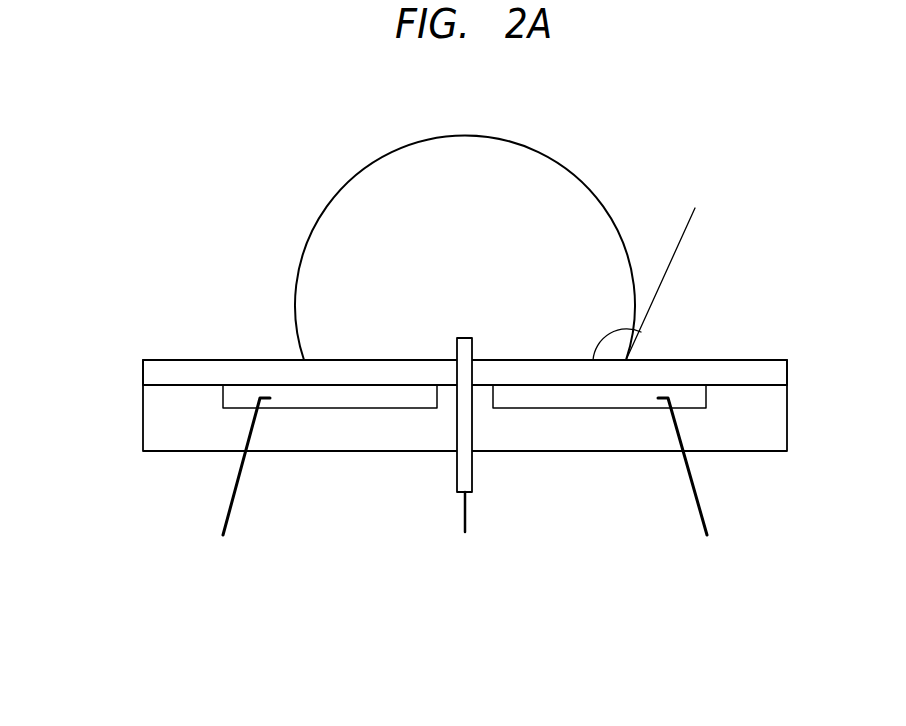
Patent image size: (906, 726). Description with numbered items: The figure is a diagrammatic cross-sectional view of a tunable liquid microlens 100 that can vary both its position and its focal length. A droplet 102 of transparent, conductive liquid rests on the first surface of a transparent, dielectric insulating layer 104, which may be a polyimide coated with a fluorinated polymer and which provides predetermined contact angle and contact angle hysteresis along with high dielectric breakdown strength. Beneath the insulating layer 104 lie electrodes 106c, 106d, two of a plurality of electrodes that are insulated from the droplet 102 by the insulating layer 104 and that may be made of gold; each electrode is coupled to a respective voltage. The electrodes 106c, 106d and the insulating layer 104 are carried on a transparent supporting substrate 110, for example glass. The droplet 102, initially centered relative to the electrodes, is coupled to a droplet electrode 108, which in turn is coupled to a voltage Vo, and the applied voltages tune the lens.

The tunable liquid microlens 100 is at (425, 351).
The droplet 102 is at (567, 200).
The insulating layer 104 is at (153, 367).
The electrode 106c is at (357, 402).
The electrode 106d is at (603, 402).
The droplet electrode 108 is at (455, 470).
The supporting substrate 110 is at (153, 420).